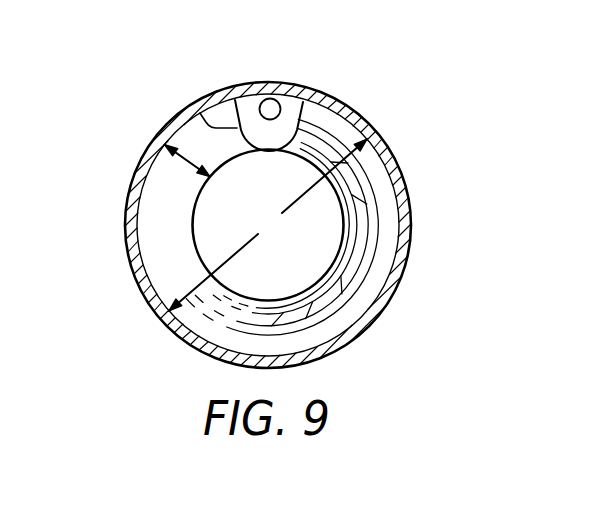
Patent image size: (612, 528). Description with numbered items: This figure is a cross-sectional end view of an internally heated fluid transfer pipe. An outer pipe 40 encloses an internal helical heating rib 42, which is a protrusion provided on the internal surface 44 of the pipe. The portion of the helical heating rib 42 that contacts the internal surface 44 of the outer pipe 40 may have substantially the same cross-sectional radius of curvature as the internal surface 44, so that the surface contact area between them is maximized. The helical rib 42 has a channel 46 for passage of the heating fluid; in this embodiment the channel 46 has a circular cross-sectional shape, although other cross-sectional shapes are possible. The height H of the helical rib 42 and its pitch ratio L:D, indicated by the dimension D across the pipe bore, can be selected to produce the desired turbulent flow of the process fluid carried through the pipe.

The outer pipe 40 is at (410, 205).
The internal helical heating rib 42 is at (236, 102).
The internal surface 44 is at (392, 290).
The channel 46 is at (270, 109).
The pitch ratio diameter D is at (268, 225).
The height H is at (192, 168).